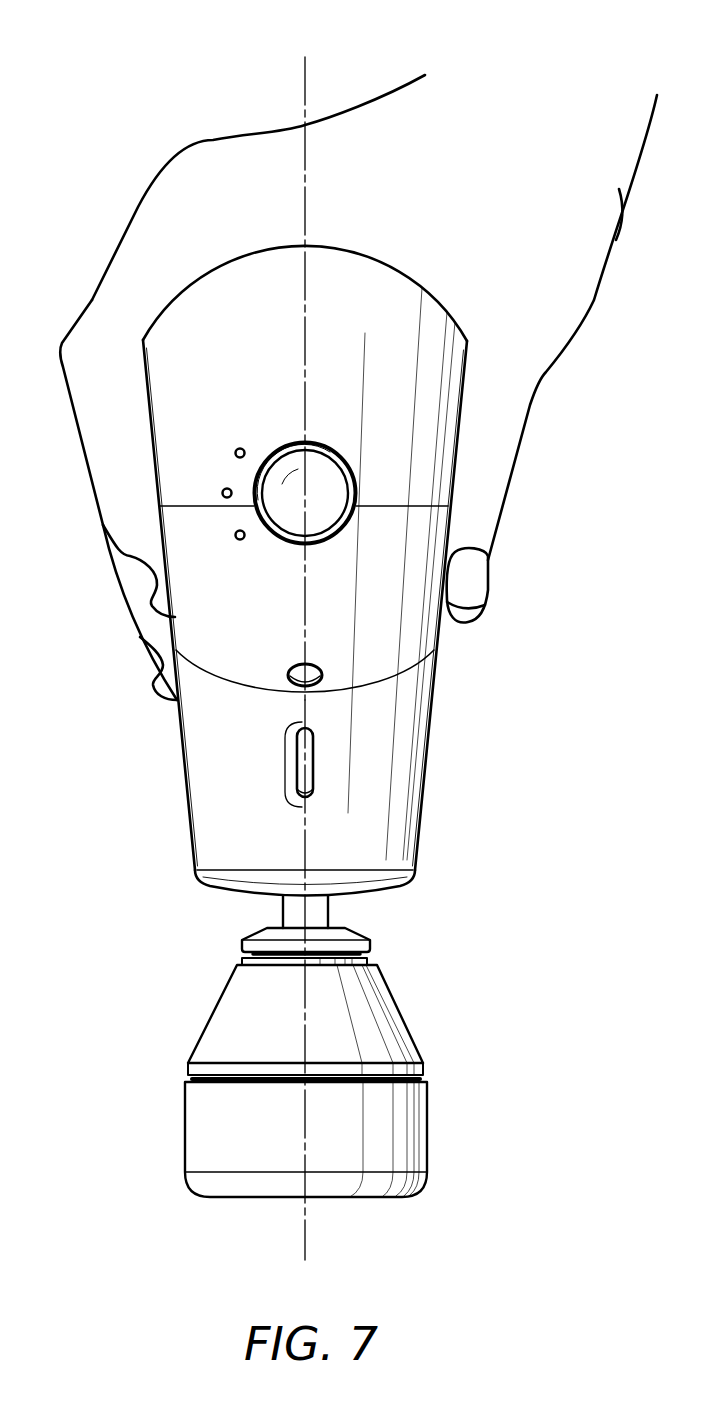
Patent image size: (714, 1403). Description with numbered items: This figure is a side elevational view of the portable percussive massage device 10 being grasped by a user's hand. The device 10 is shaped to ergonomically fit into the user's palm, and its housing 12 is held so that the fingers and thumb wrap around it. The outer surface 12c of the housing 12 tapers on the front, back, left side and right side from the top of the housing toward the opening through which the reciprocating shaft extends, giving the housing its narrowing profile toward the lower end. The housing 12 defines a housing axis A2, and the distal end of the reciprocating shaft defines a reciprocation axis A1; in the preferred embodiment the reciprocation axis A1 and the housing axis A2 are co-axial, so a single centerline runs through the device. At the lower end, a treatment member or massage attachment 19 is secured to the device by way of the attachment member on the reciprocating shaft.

The percussive massage device 10 is at (502, 836).
The housing 12 is at (407, 705).
The outer surface 12c is at (187, 765).
The massage attachment 19 is at (425, 1127).
The reciprocation axis A1 is at (305, 1227).
The housing axis A2 is at (305, 78).